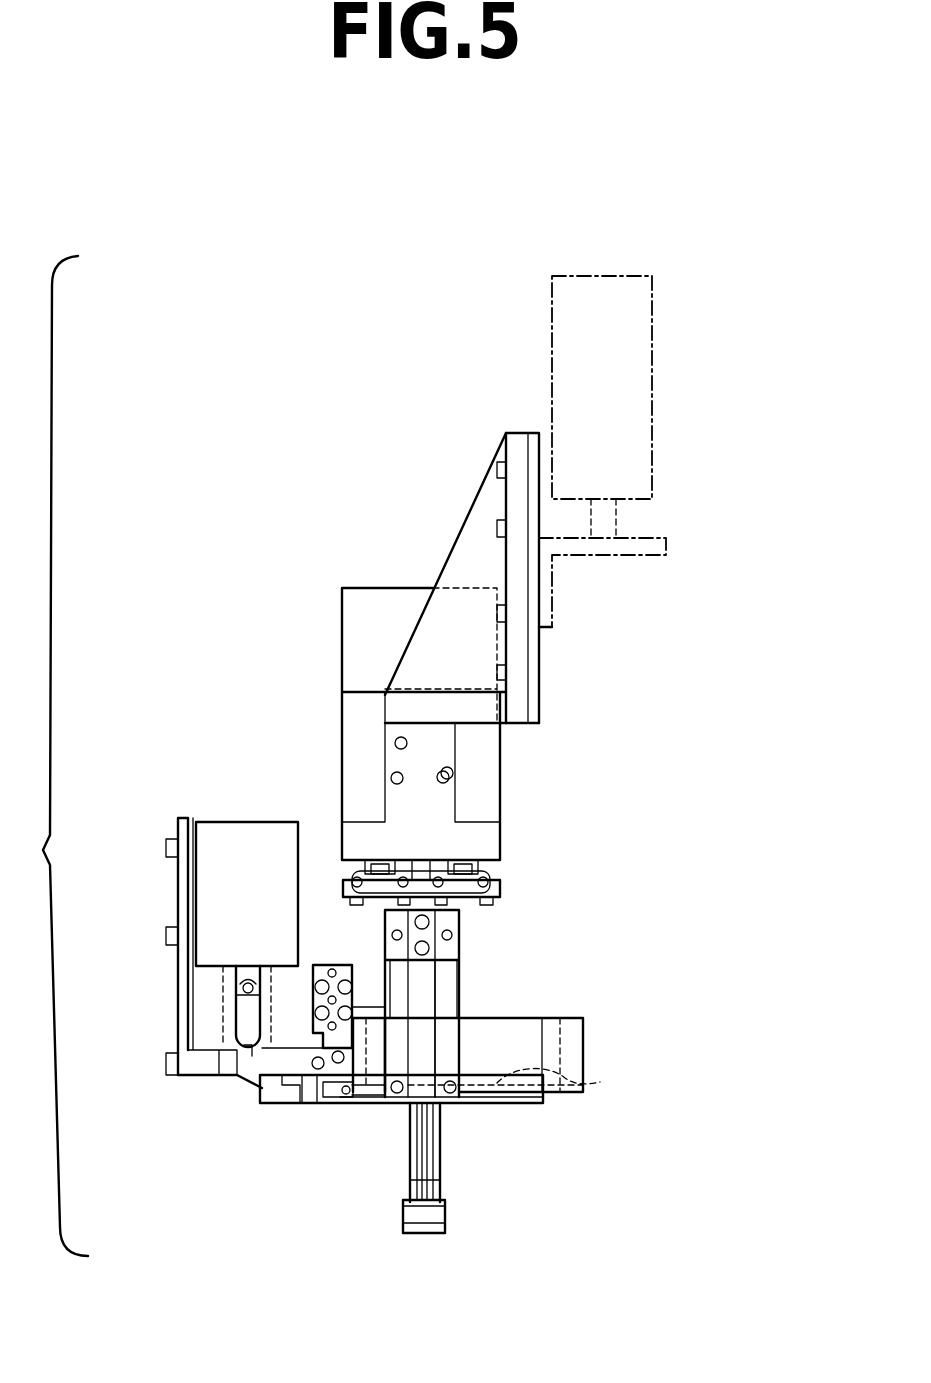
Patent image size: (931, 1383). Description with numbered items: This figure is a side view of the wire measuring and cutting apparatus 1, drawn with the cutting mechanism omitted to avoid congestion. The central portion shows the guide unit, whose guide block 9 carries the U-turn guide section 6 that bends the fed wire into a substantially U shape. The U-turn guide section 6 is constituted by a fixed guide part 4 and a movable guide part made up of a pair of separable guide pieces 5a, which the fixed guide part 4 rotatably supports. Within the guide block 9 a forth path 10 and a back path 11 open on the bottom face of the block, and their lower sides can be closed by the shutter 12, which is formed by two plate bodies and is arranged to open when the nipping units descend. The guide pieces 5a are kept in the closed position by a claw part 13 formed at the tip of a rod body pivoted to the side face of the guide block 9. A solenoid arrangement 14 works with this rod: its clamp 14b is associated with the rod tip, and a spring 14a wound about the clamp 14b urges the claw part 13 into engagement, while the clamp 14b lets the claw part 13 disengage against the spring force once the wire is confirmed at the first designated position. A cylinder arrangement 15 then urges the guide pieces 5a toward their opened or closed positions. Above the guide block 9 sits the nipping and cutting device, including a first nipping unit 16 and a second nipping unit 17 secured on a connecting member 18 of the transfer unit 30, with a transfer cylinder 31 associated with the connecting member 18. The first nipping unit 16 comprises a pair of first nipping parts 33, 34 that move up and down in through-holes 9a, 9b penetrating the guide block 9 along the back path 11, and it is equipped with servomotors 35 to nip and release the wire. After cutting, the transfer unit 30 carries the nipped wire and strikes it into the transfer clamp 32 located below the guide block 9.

The wire measuring and cutting apparatus 1 is at (258, 562).
The transfer unit 30 is at (527, 451).
The transfer cylinder 31 is at (552, 350).
The connecting member 18 is at (540, 690).
The servomotors 35 is at (342, 620).
The first nipping unit 16 is at (518, 901).
The second nipping unit 17 is at (520, 877).
The first nipping part 33 is at (390, 985).
The first nipping part 34 is at (452, 985).
The guide block 9 is at (505, 1017).
The forth path 10 is at (555, 1067).
The back path 11 is at (555, 1067).
The through-hole 9a is at (408, 1048).
The through-hole 9b is at (430, 1116).
The fixed guide part 4 is at (375, 1149).
The guide piece 5a is at (300, 1105).
The U-turn guide section 6 is at (375, 1175).
The shutter 12 is at (513, 1105).
The transfer clamp 32 is at (405, 1165).
The solenoid arrangement 14 is at (245, 822).
The spring 14a is at (225, 1040).
The clamp 14b is at (245, 1035).
The claw part 13 is at (247, 1088).
The cylinder arrangement 15 is at (325, 965).